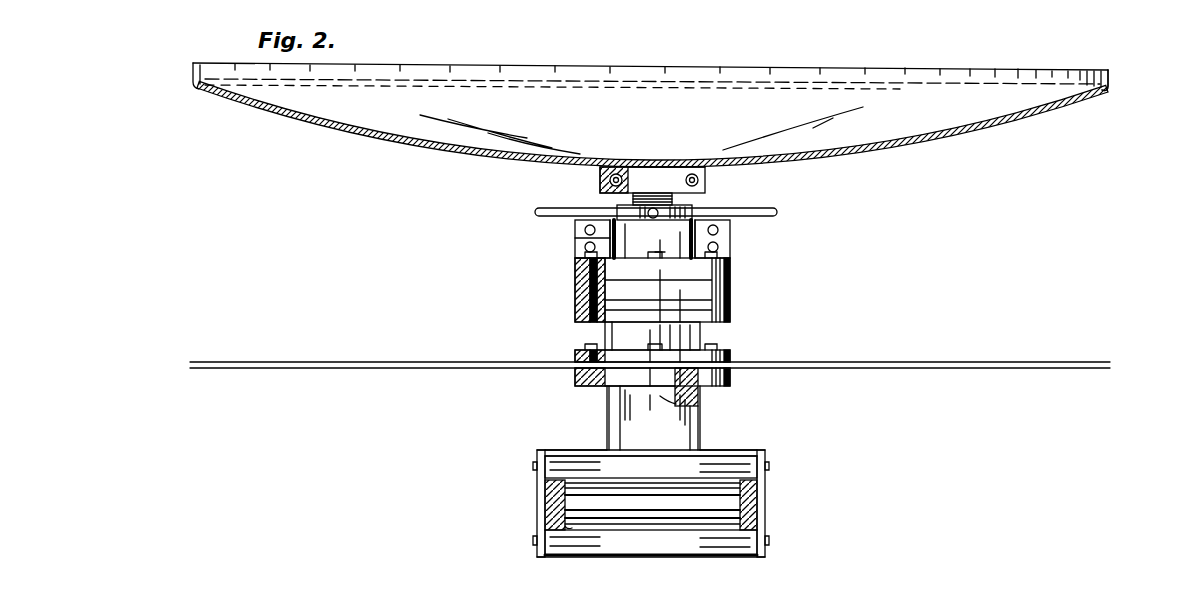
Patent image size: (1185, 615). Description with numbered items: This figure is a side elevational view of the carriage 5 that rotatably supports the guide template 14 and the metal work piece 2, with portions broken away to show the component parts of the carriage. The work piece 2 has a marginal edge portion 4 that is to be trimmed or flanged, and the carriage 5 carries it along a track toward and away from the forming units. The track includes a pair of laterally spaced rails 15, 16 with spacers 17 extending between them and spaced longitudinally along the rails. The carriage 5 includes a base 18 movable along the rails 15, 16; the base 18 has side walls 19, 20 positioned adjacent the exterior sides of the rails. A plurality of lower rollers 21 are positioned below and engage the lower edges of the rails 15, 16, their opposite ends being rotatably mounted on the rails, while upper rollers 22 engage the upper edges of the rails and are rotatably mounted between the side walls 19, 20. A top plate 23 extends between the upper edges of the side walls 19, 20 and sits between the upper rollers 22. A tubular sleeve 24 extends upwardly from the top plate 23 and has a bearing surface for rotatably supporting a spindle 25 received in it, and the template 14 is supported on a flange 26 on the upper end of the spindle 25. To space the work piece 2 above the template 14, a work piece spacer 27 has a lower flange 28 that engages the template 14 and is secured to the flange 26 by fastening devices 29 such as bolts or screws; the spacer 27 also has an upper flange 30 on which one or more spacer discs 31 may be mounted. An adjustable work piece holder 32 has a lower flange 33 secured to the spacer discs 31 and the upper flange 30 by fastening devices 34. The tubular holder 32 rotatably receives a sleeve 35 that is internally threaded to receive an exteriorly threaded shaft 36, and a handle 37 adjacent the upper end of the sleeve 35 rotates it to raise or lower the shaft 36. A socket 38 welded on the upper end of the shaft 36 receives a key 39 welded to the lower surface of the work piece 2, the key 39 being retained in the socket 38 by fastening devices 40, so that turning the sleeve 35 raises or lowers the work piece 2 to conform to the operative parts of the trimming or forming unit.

The metal work piece 2 is at (992, 122).
The marginal edge portion 4 is at (1110, 80).
The carriage 5 is at (743, 283).
The guide template 14 is at (1028, 362).
The rail 15 is at (545, 498).
The rail 16 is at (766, 502).
The spacers 17 is at (540, 527).
The base 18 is at (766, 456).
The side wall 19 is at (537, 478).
The side wall 20 is at (766, 528).
The lower rollers 21 is at (740, 556).
The upper rollers 22 is at (766, 482).
The top plate 23 is at (715, 450).
The tubular sleeve 24 is at (607, 410).
The spindle 25 is at (600, 392).
The flange 26 is at (731, 385).
The work piece spacer 27 is at (701, 338).
The lower flange 28 is at (731, 357).
The fastening devices 29 is at (587, 348).
The upper flange 30 is at (731, 310).
The spacer discs 31 is at (575, 298).
The work piece holder 32 is at (575, 240).
The lower flange 33 is at (576, 266).
The fastening devices 34 is at (712, 258).
The sleeve 35 is at (693, 206).
The threaded shaft 36 is at (635, 203).
The handle 37 is at (778, 212).
The socket 38 is at (600, 181).
The key 39 is at (648, 168).
The fastening devices 40 is at (700, 180).